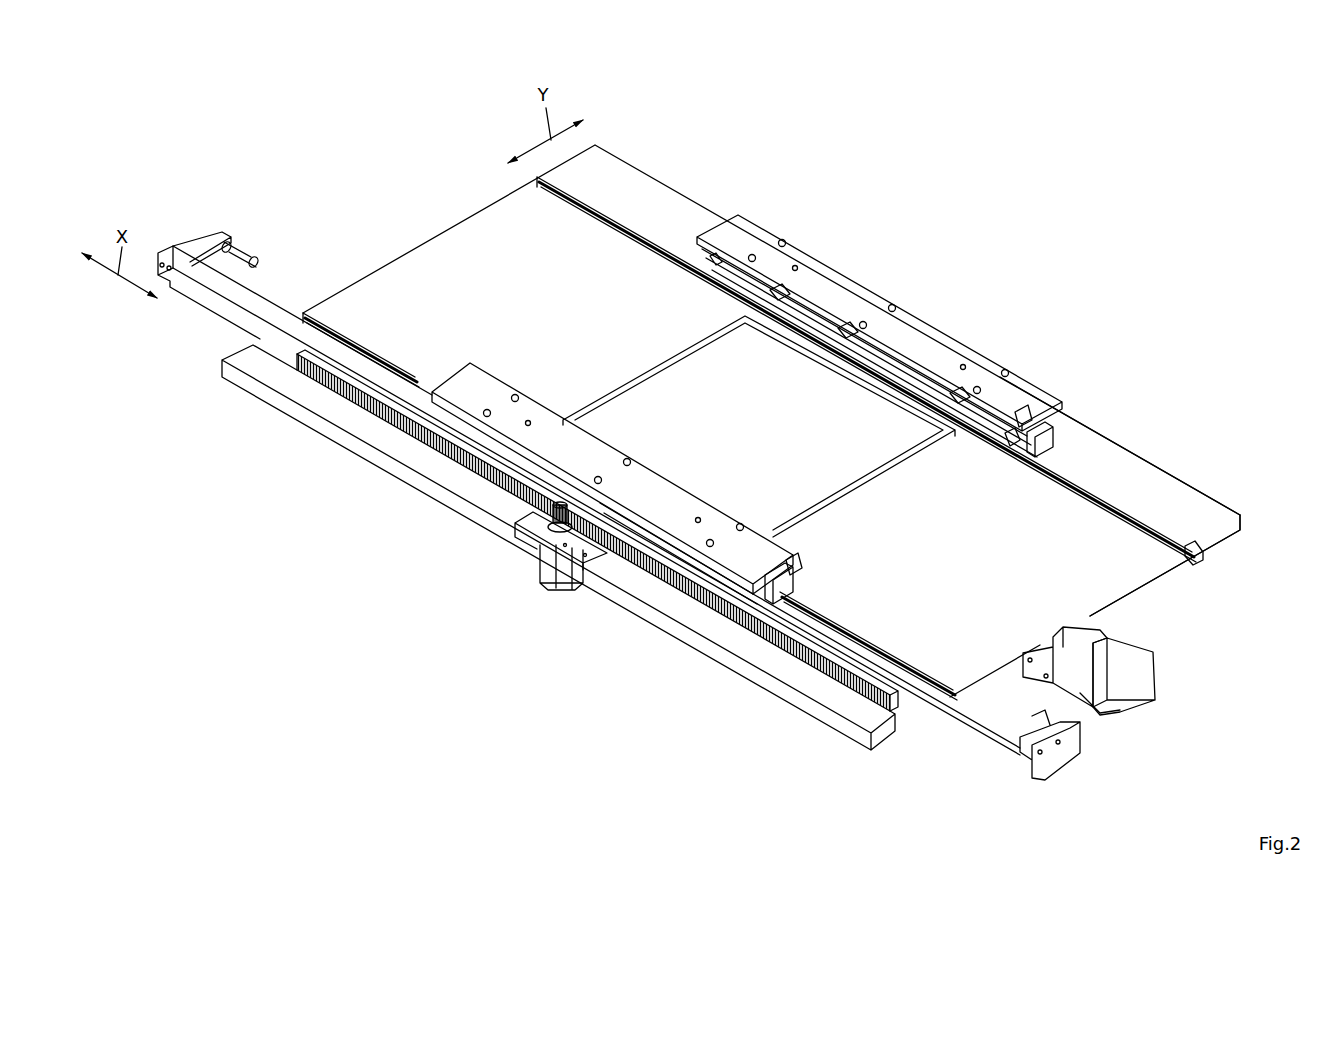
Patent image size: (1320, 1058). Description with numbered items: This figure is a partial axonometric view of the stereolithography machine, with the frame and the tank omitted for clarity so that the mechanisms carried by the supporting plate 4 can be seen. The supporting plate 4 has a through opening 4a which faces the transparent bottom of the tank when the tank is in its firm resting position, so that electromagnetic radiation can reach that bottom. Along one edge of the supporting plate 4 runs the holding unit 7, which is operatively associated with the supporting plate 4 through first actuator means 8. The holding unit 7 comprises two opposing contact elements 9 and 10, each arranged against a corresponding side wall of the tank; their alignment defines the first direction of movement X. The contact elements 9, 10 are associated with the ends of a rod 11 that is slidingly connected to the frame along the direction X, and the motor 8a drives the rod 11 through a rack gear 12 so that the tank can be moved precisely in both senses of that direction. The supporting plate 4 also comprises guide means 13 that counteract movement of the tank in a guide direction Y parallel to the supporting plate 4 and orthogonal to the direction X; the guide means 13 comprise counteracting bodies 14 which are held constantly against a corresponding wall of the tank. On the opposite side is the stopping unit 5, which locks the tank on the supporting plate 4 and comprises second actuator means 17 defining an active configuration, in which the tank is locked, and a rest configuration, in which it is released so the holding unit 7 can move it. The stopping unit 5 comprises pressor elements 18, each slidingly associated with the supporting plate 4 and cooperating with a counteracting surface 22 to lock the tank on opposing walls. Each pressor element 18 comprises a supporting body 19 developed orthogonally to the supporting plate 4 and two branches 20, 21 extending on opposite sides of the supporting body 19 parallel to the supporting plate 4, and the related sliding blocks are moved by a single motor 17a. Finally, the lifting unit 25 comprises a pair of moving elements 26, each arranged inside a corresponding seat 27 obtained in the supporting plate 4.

The supporting plate 4 is at (452, 208).
The through opening 4a is at (664, 348).
The stopping unit 5 is at (847, 250).
The holding unit 7 is at (197, 212).
The first actuator means 8 is at (563, 605).
The motor 8a is at (548, 565).
The contact element 9 is at (237, 251).
The contact element 10 is at (1045, 721).
The rod 11 is at (193, 285).
The rack gear 12 is at (543, 528).
The guide means 13 is at (1012, 440).
The counteracting body 14 is at (1042, 422).
The second actuator means 17 is at (1170, 673).
The motor 17a is at (1137, 692).
The pressor element 18 is at (707, 563).
The supporting body 19 is at (773, 593).
The branch 20 is at (792, 567).
The branch 21 is at (742, 568).
The counteracting surface 22 is at (1137, 555).
The lifting unit 25 is at (1133, 498).
The moving element 26 is at (336, 328).
The seat 27 is at (1205, 551).